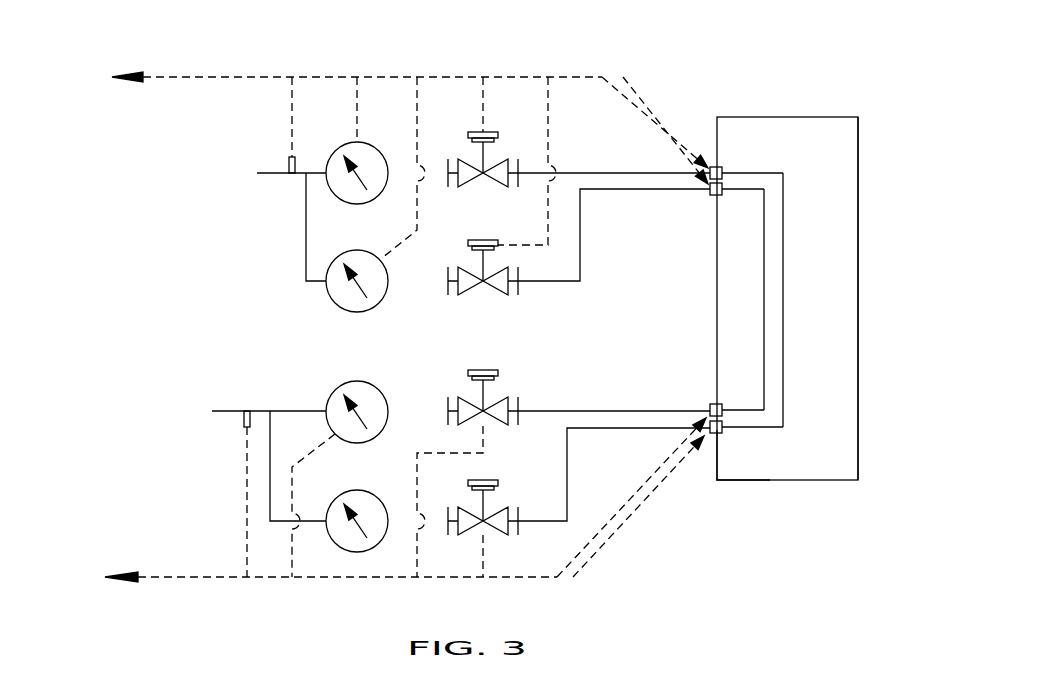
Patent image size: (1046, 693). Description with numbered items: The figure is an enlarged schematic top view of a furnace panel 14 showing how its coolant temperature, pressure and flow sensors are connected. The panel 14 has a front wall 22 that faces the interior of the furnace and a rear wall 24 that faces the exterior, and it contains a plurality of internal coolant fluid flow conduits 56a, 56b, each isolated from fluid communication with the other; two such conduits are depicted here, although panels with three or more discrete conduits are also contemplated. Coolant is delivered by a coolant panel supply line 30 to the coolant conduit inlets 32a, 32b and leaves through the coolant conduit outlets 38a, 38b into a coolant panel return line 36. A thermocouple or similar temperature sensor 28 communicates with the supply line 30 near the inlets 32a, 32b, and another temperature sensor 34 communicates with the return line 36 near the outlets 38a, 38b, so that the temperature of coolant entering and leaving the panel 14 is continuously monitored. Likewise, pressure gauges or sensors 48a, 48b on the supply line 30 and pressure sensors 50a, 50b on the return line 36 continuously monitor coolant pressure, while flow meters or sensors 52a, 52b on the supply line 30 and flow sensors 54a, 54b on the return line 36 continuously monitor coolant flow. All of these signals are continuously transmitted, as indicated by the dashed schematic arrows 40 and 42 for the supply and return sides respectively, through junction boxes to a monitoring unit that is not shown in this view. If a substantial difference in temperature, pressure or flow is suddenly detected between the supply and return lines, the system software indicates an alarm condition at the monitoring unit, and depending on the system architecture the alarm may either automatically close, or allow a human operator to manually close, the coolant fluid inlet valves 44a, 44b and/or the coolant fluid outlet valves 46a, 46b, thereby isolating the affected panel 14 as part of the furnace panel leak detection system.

The furnace panel 14 is at (787, 117).
The front wall 22 is at (859, 372).
The rear wall 24 is at (717, 481).
The temperature sensor 28 is at (288, 160).
The coolant panel supply line 30 is at (262, 175).
The coolant conduit inlet 32a is at (755, 173).
The coolant conduit inlet 32b is at (745, 192).
The temperature sensor 34 is at (240, 424).
The coolant panel return line 36 is at (214, 411).
The coolant conduit outlet 38a is at (765, 430).
The coolant conduit outlet 38b is at (746, 408).
The schematic arrow 40 is at (175, 79).
The schematic arrow 42 is at (160, 577).
The coolant fluid inlet valve 44a is at (720, 167).
The coolant fluid inlet valve 44b is at (711, 197).
The coolant fluid outlet valve 46a is at (722, 432).
The coolant fluid outlet valve 46b is at (709, 405).
The pressure sensor 48a is at (337, 150).
The pressure sensor 48b is at (331, 300).
The pressure sensor 50a is at (373, 491).
The pressure sensor 50b is at (338, 386).
The flow sensor 52a is at (496, 160).
The flow sensor 52b is at (495, 288).
The flow sensor 54a is at (498, 512).
The flow sensor 54b is at (497, 406).
The coolant fluid flow conduit 56a is at (785, 305).
The coolant fluid flow conduit 56b is at (764, 325).